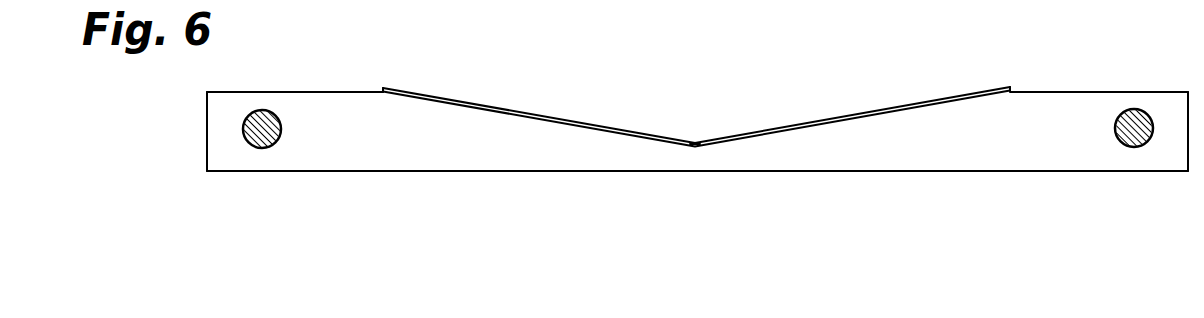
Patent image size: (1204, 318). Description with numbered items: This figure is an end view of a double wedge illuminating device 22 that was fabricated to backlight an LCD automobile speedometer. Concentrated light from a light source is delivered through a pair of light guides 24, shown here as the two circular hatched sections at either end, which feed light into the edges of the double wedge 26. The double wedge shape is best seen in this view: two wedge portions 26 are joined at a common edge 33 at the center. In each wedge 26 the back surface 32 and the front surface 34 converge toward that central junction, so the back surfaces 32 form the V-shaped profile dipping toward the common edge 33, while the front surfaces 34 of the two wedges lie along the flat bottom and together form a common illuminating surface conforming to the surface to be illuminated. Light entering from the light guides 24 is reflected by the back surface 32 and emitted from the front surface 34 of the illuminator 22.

The double wedge illuminating device 22 is at (633, 217).
The light guides 24 is at (262, 149).
The double wedge 26 is at (474, 148).
The back surface 32 is at (505, 112).
The common edge 33 is at (698, 143).
The front surface 34 is at (492, 172).